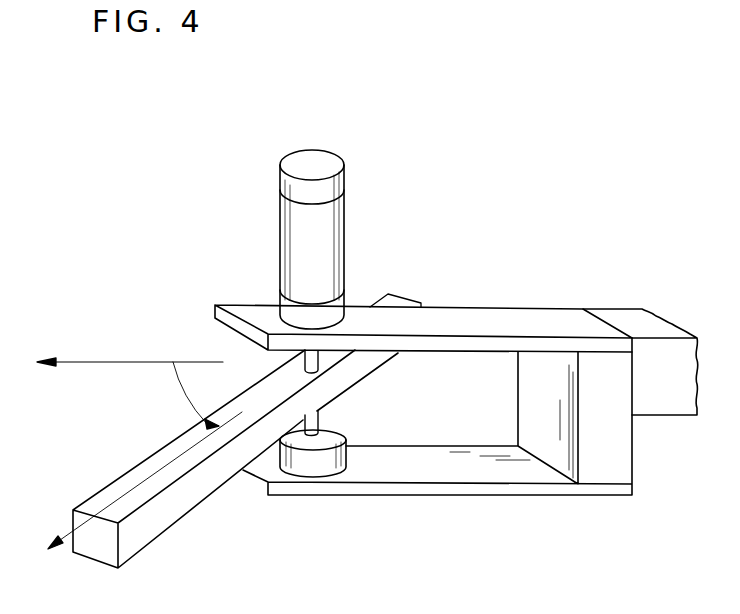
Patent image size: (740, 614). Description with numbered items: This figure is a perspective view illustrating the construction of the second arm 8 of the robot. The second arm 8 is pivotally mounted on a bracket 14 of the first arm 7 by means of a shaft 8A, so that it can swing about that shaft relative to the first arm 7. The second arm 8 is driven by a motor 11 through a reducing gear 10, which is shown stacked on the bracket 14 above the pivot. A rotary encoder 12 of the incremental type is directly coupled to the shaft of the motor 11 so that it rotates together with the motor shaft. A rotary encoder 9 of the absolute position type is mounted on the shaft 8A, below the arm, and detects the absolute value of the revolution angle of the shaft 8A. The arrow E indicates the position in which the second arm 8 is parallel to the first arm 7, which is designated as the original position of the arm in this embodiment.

The first arm 7 is at (623, 317).
The second arm 8 is at (178, 505).
The shaft 8A is at (318, 430).
The rotary encoder of absolute position type 9 is at (343, 460).
The reducing gear 10 is at (343, 298).
The motor 11 is at (338, 220).
The rotary encoder of incremental type 12 is at (347, 182).
The bracket 14 is at (540, 315).